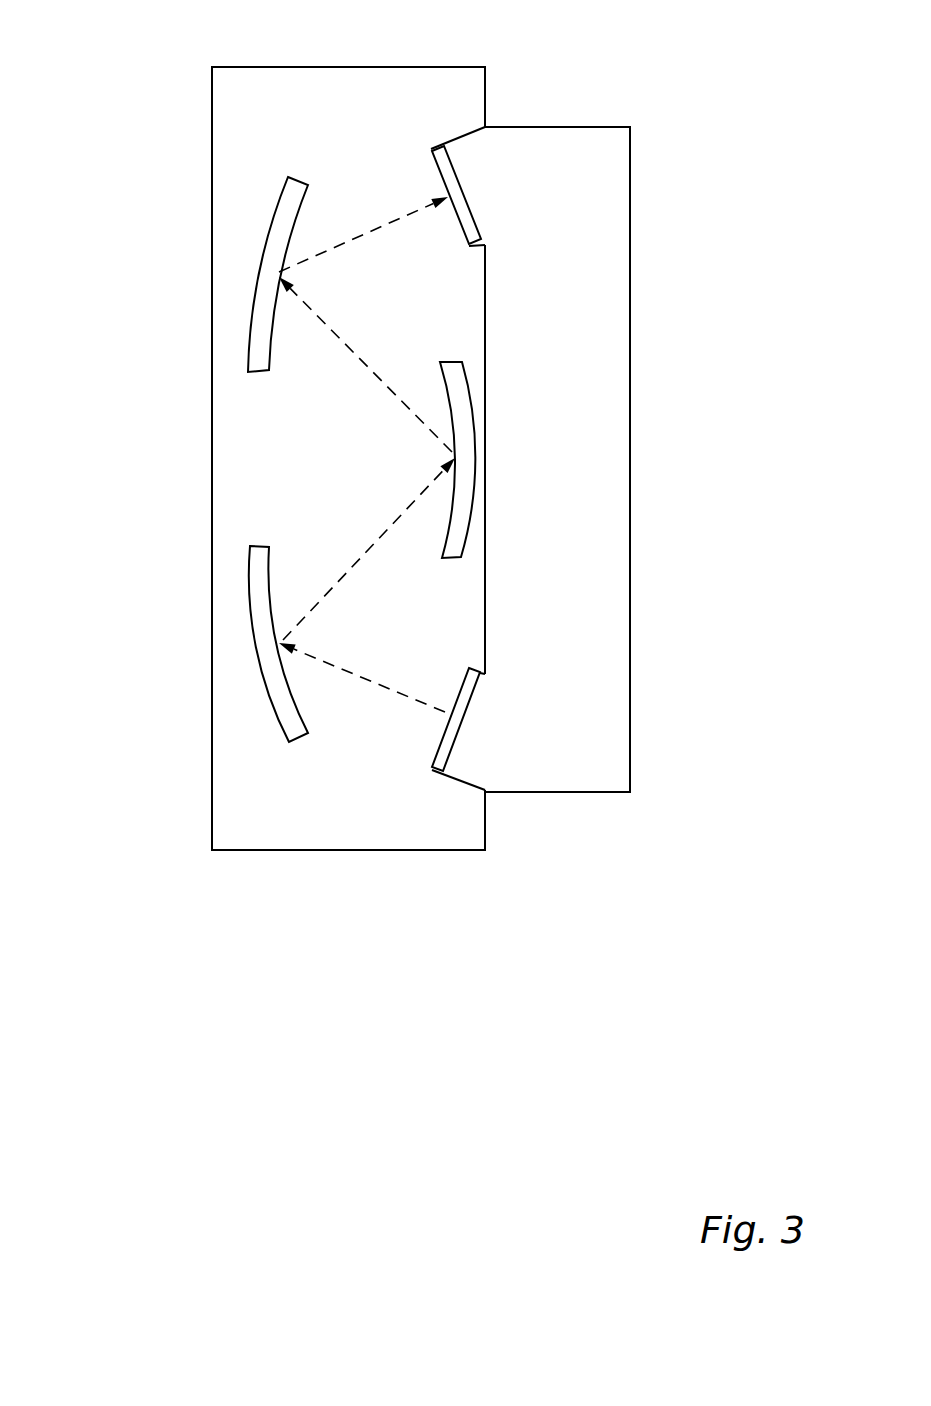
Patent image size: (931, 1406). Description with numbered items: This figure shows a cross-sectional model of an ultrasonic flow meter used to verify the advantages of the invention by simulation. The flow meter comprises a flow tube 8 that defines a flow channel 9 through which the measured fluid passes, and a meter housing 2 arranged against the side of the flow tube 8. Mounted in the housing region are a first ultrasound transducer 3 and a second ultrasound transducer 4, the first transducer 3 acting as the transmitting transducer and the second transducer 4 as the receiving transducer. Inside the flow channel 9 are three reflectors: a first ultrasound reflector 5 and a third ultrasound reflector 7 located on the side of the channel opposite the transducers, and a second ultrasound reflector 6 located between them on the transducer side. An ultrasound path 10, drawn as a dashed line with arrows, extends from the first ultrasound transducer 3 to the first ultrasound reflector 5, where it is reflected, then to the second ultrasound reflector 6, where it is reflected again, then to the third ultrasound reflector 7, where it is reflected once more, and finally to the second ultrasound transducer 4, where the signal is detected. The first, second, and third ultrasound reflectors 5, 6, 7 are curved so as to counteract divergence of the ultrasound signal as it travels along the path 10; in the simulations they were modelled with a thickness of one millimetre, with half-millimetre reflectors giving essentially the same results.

The meter housing 2 is at (562, 793).
The first ultrasound transducer 3 is at (438, 714).
The second ultrasound transducer 4 is at (455, 193).
The first ultrasound reflector 5 is at (263, 643).
The second ultrasound reflector 6 is at (460, 455).
The third ultrasound reflector 7 is at (263, 267).
The flow tube 8 is at (212, 128).
The flow channel 9 is at (327, 438).
The ultrasound path 10 is at (357, 548).